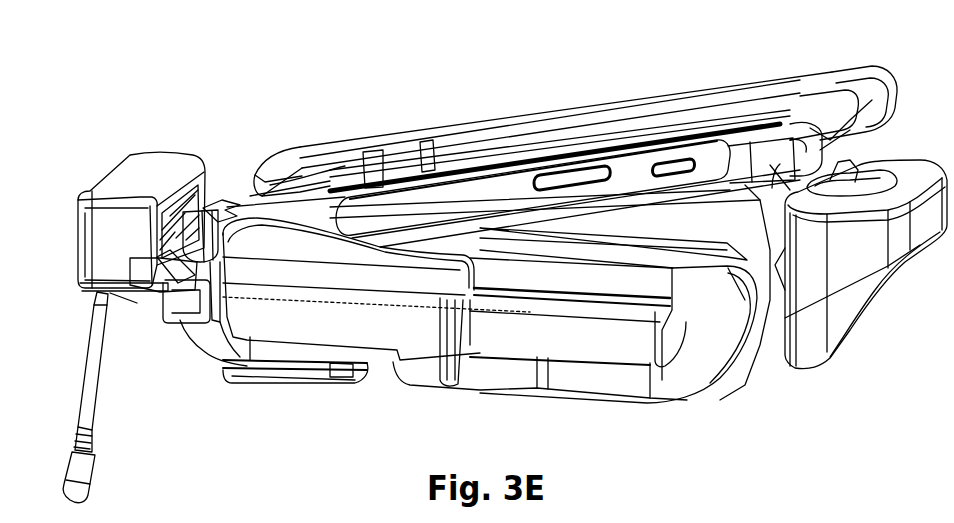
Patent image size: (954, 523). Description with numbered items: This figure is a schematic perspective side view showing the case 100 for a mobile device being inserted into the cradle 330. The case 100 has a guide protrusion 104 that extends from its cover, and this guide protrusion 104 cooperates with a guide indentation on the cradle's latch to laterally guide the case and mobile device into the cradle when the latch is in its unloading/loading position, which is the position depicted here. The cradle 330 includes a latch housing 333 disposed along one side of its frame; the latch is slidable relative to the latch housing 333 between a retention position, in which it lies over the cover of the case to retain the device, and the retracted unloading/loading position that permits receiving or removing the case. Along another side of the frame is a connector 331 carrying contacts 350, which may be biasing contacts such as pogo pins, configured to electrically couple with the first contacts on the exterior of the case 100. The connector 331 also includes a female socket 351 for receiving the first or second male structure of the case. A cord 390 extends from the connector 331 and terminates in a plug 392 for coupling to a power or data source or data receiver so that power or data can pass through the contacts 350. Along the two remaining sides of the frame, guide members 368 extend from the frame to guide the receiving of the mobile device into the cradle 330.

The case 100 is at (440, 130).
The guide protrusion 104 is at (843, 93).
The cradle 330 is at (140, 155).
The connector 331 is at (75, 280).
The latch housing 333 is at (908, 162).
The contacts 350 is at (198, 202).
The female socket 351 is at (203, 208).
The guide members 368 is at (337, 273).
The cord 390 is at (83, 373).
The plug 392 is at (93, 467).